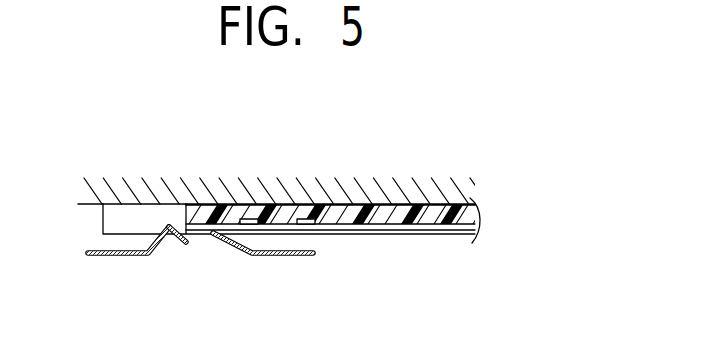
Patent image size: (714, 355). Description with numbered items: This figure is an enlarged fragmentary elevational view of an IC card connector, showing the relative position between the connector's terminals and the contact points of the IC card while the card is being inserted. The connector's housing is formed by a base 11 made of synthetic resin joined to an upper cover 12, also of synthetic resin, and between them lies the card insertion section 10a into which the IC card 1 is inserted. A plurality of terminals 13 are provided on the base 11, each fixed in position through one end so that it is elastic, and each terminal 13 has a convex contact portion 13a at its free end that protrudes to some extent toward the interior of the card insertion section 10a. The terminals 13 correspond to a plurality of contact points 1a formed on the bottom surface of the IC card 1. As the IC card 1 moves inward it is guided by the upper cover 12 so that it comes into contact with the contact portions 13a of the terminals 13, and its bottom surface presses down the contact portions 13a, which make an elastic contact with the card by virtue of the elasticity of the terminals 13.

The IC card 1 is at (458, 217).
The contact points 1a is at (305, 215).
The card insertion section 10a is at (136, 217).
The base 11 is at (93, 213).
The upper cover 12 is at (375, 192).
The terminals 13 is at (200, 287).
The contact portion 13a is at (172, 242).